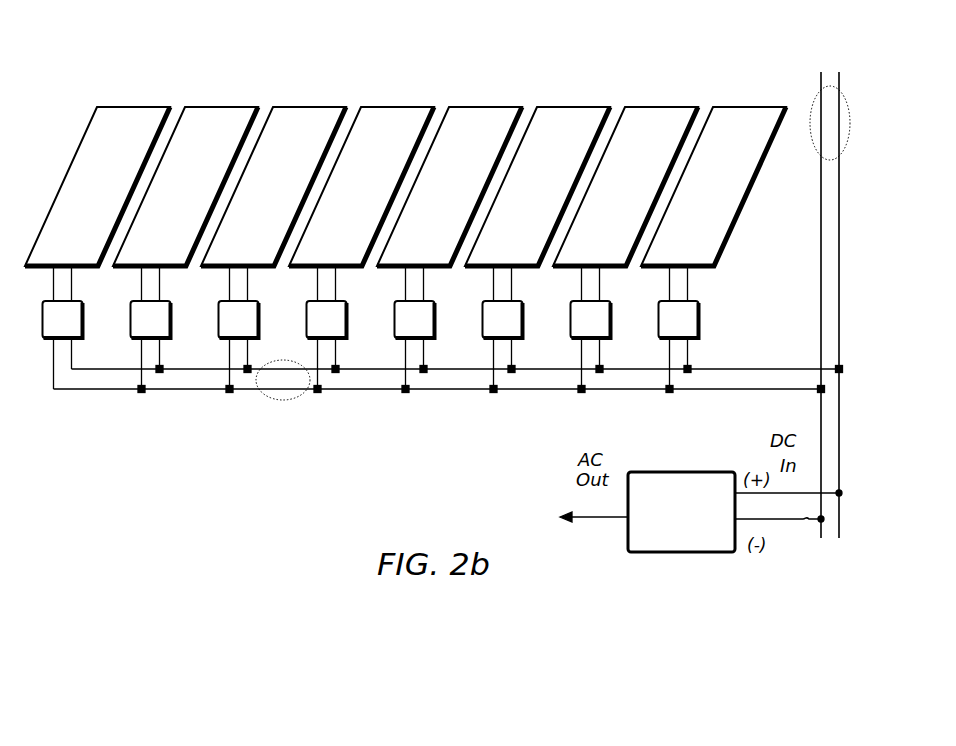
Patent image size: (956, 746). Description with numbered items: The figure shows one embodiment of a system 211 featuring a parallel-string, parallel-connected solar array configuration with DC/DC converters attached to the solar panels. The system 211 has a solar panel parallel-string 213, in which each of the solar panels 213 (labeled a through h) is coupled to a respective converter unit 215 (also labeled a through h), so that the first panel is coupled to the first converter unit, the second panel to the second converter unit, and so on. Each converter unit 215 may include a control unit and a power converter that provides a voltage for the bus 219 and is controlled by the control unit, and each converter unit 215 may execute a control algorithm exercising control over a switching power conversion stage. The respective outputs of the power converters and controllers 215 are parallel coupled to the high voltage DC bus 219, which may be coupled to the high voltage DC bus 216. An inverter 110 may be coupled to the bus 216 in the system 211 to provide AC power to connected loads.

The system 211 is at (90, 58).
The solar panel parallel-string 213 is at (66, 138).
The converter unit 215 is at (712, 309).
The high voltage DC bus 216 is at (812, 112).
The high voltage DC bus 219 is at (268, 393).
The inverter 110 is at (681, 512).